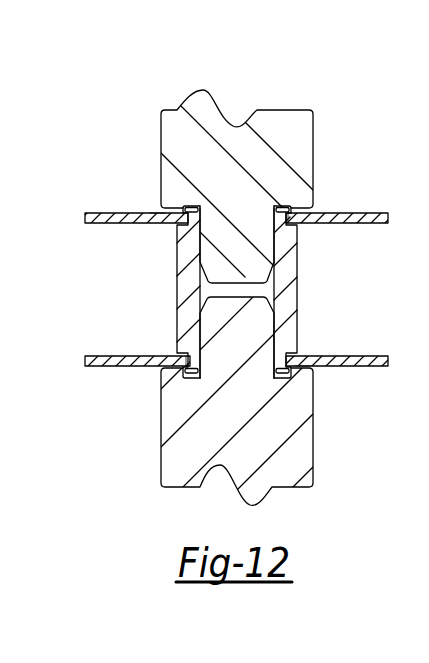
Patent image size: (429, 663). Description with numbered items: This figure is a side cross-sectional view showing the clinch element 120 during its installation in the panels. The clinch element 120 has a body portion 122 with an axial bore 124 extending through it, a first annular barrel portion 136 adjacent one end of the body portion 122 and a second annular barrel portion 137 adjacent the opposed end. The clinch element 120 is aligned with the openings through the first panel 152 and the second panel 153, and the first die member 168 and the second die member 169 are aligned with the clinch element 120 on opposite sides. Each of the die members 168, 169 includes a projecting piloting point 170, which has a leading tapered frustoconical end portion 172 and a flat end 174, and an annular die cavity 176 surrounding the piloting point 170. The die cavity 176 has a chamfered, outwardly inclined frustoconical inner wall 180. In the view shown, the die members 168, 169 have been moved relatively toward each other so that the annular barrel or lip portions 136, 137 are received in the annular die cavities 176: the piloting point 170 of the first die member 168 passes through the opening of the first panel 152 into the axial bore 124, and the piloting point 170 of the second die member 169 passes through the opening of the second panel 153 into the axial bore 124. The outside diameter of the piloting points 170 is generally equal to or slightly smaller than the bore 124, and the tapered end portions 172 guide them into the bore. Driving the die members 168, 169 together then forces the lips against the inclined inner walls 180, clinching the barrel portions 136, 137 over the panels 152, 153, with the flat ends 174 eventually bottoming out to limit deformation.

The clinch element 120 is at (303, 308).
The body portion 122 is at (177, 257).
The axial bore 124 is at (205, 233).
The first annular barrel portion 136 is at (196, 218).
The second annular barrel portion 137 is at (279, 372).
The first panel 152 is at (122, 212).
The second panel 153 is at (122, 369).
The first die member 168 is at (302, 133).
The second die member 169 is at (294, 447).
The projecting piloting point 170 is at (244, 252).
The tapered frustoconical end portion 172 is at (279, 288).
The flat end 174 is at (228, 286).
The annular die cavity 176 is at (159, 213).
The frustoconical inner wall 180 is at (292, 210).